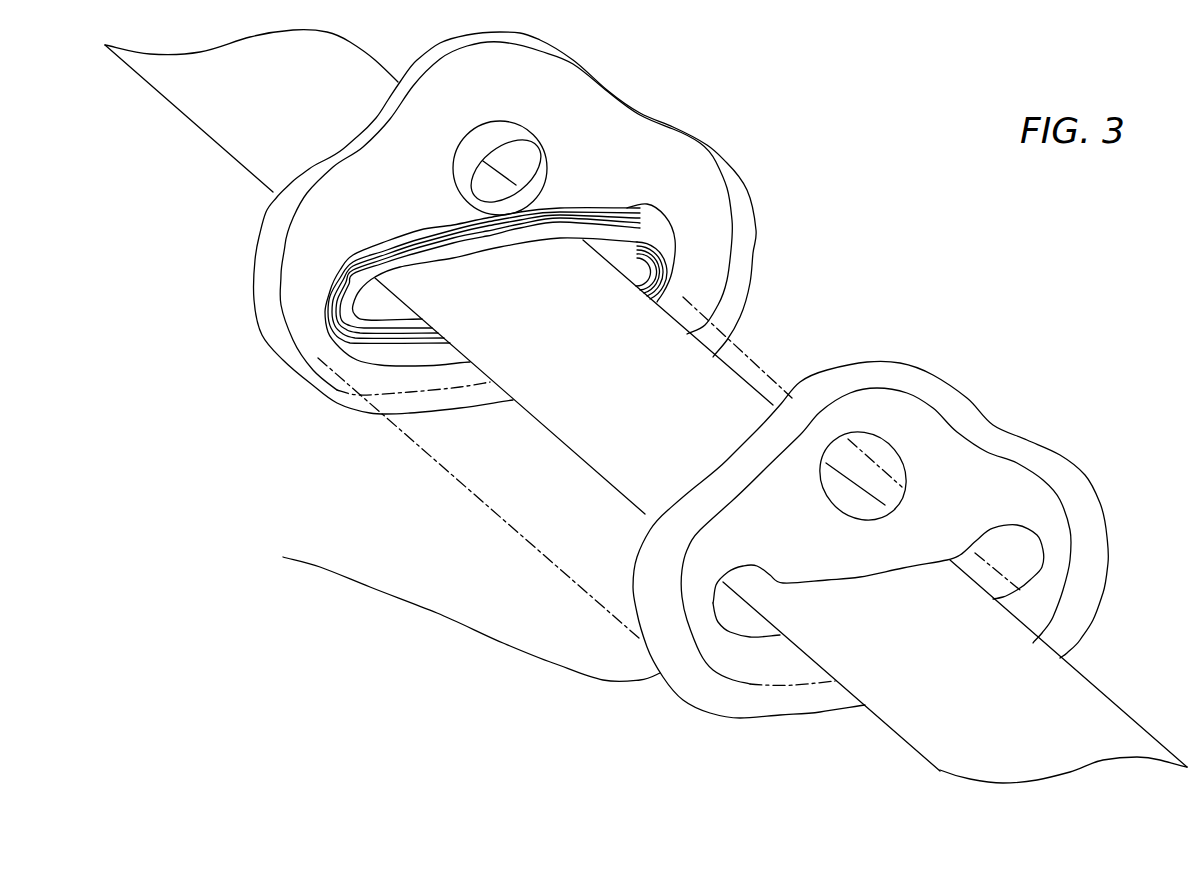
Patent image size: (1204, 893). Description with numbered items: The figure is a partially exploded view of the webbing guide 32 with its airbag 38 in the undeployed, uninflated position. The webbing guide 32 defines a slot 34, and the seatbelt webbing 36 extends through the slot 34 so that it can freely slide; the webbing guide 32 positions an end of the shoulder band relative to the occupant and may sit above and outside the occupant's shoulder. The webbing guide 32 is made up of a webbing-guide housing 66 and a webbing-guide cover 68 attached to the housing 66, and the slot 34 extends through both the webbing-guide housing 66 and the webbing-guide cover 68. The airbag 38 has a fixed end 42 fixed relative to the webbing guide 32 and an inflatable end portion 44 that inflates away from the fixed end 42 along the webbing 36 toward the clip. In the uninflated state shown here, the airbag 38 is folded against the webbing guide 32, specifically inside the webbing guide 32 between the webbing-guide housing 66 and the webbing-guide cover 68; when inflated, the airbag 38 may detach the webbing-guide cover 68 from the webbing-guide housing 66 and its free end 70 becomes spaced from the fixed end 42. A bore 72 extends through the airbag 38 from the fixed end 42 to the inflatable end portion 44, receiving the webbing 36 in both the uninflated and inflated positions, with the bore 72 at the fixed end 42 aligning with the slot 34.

The webbing guide 32 is at (256, 513).
The slot 34 is at (747, 637).
The webbing 36 is at (900, 738).
The airbag 38 is at (607, 203).
The fixed end 42 is at (338, 270).
The inflatable end portion 44 is at (663, 213).
The webbing-guide housing 66 is at (333, 403).
The webbing-guide cover 68 is at (459, 520).
The free end 70 is at (684, 272).
The bore 72 is at (403, 347).